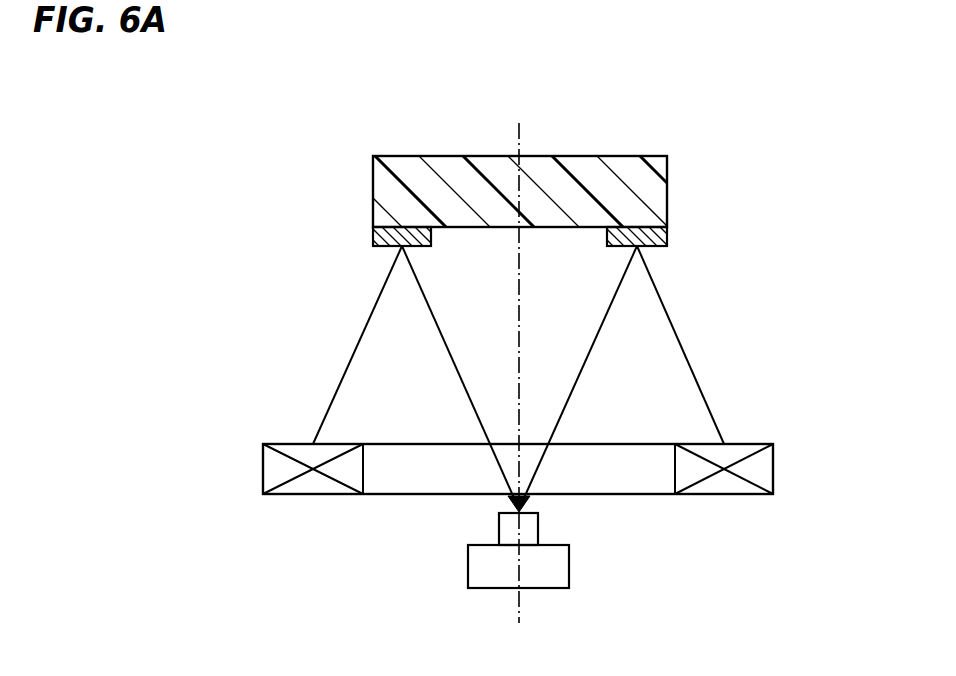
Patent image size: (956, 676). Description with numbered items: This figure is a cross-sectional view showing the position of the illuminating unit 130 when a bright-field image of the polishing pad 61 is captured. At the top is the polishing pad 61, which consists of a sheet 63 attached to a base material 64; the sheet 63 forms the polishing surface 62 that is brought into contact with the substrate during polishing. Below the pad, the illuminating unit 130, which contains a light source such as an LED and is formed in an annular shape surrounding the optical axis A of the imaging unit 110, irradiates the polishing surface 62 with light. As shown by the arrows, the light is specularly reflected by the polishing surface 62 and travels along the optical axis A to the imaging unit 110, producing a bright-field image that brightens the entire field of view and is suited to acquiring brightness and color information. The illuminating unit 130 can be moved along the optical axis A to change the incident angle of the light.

The polishing pad 61 is at (497, 204).
The polishing surface 62 is at (386, 249).
The sheet 63 is at (502, 239).
The base material 64 is at (386, 190).
The illuminating unit 130 is at (773, 468).
The imaging unit 110 is at (569, 566).
The optical axis A is at (518, 604).